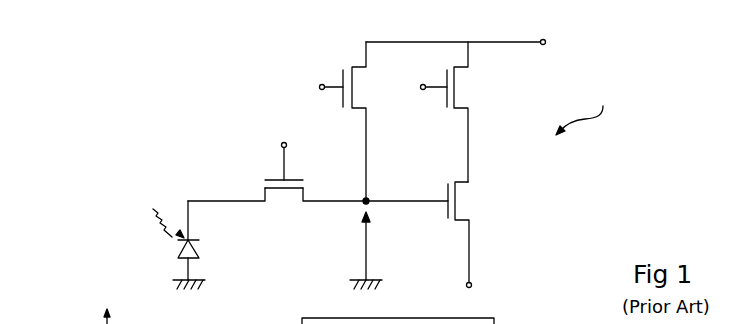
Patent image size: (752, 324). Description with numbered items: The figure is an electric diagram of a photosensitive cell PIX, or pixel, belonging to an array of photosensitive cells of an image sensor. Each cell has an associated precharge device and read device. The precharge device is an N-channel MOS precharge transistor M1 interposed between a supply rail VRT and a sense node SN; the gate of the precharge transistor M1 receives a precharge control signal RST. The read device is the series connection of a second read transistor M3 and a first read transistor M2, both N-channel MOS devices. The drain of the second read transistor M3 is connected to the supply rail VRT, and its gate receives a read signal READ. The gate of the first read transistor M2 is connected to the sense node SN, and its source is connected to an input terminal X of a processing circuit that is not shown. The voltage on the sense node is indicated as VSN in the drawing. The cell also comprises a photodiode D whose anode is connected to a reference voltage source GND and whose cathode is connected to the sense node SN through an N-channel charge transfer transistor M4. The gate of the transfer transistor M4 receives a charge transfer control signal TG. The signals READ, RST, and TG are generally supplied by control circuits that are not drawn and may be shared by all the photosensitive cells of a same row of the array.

The supply rail VRT is at (475, 39).
The precharge transistor M1 is at (364, 121).
The precharge control signal RST is at (314, 77).
The second read transistor M3 is at (468, 112).
The read signal READ is at (414, 77).
The first read transistor M2 is at (427, 232).
The input terminal X is at (480, 282).
The sense node SN is at (367, 201).
The sense node voltage VSN is at (384, 246).
The charge transfer transistor M4 is at (277, 185).
The charge transfer control signal TG is at (281, 144).
The photodiode D is at (174, 240).
The reference voltage source GND is at (250, 284).
The photosensitive cell PIX is at (588, 109).